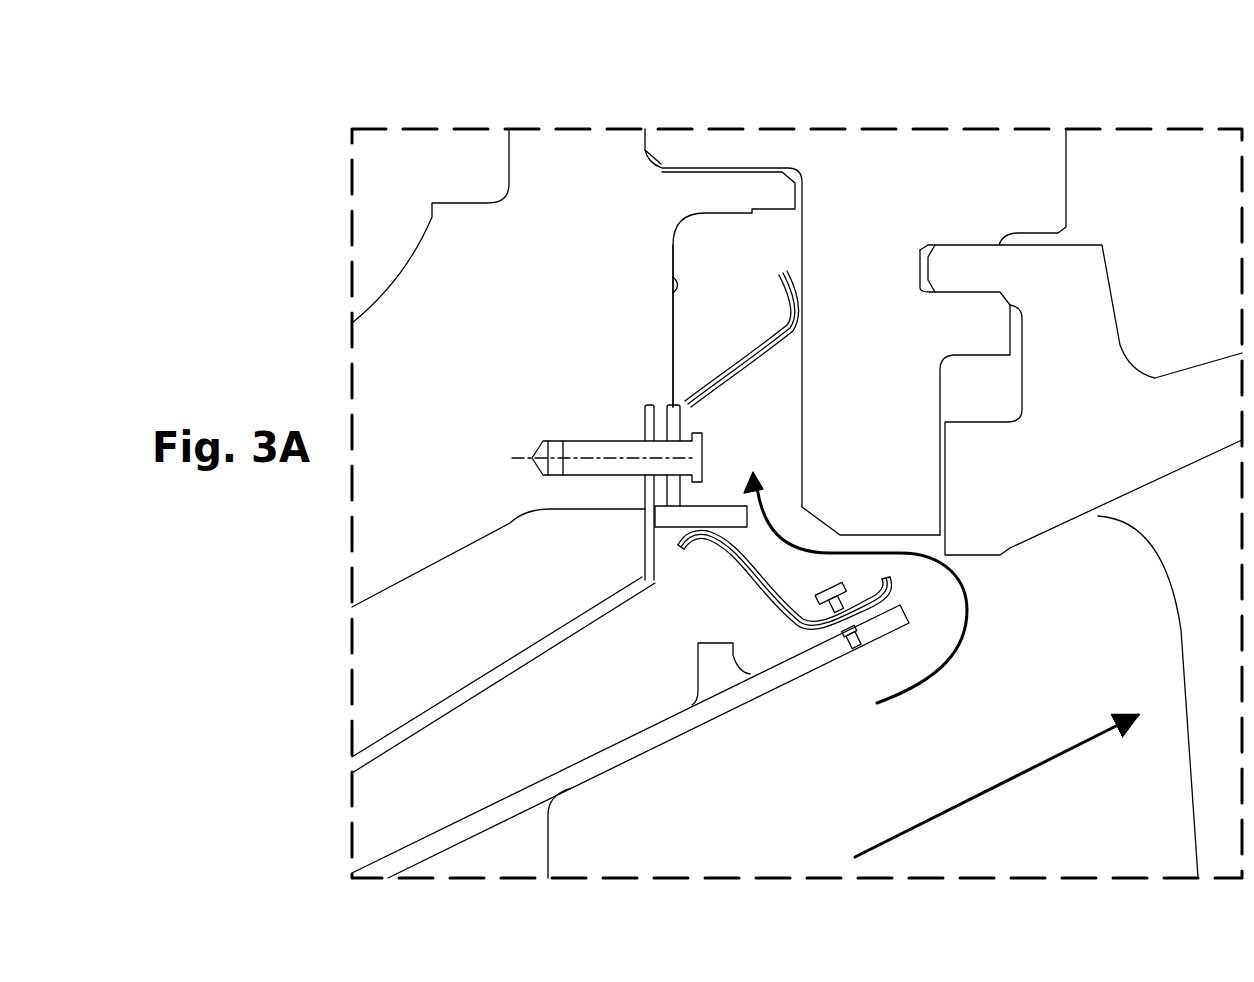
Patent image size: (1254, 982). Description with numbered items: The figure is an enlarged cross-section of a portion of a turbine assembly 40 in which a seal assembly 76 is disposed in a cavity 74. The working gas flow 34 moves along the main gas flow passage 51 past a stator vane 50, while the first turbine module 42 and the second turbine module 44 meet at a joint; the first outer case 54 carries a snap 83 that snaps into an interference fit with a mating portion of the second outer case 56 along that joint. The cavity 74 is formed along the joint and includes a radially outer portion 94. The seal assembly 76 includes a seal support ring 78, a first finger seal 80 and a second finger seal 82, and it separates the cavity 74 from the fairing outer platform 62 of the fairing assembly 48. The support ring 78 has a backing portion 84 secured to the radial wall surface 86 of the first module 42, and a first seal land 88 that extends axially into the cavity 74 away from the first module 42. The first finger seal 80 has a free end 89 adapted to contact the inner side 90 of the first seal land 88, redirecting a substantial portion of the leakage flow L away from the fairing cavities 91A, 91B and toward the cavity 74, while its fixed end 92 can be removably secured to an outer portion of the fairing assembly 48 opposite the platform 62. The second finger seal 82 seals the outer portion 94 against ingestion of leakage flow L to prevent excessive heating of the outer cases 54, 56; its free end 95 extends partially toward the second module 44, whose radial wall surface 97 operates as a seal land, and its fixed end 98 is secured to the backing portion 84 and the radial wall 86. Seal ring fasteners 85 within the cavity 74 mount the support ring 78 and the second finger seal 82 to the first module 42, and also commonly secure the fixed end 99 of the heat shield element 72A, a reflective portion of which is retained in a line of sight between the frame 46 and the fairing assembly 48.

The working gas flow 34 is at (985, 795).
The turbine assembly 40 is at (529, 74).
The first turbine module 42 is at (486, 106).
The second turbine module 44 is at (937, 124).
The frame 46 is at (398, 267).
The fairing assembly 48 is at (552, 760).
The stator vane 50 is at (1146, 305).
The main gas flow passage 51 is at (996, 696).
The first outer case 54 is at (456, 379).
The second outer case 56 is at (871, 456).
The fairing outer platform 62 is at (660, 728).
The heat shield element 72A is at (437, 723).
The cavity 74 is at (776, 457).
The seal assembly 76 is at (642, 401).
The seal support ring 78 is at (650, 490).
The first finger seal 80 is at (704, 613).
The second finger seal 82 is at (708, 314).
The snap 83 is at (726, 185).
The seal backing portion 84 is at (698, 392).
The seal ring fastener 85 is at (580, 437).
The first module radial wall surface 86 is at (673, 283).
The first seal land 88 is at (852, 568).
The first finger seal free end 89 is at (723, 553).
The first seal land inner side 90 is at (643, 547).
The fairing cavity 91A is at (499, 586).
The fairing cavity 91B is at (557, 706).
The first finger seal fixed end 92 is at (808, 630).
The annular cavity radially outer portion 94 is at (748, 230).
The second finger seal free end 95 is at (803, 313).
The second module radial wall surface 97 is at (800, 374).
The second finger seal fixed end 98 is at (676, 496).
The heat shield fixed end 99 is at (643, 523).
The leakage flow L is at (968, 620).